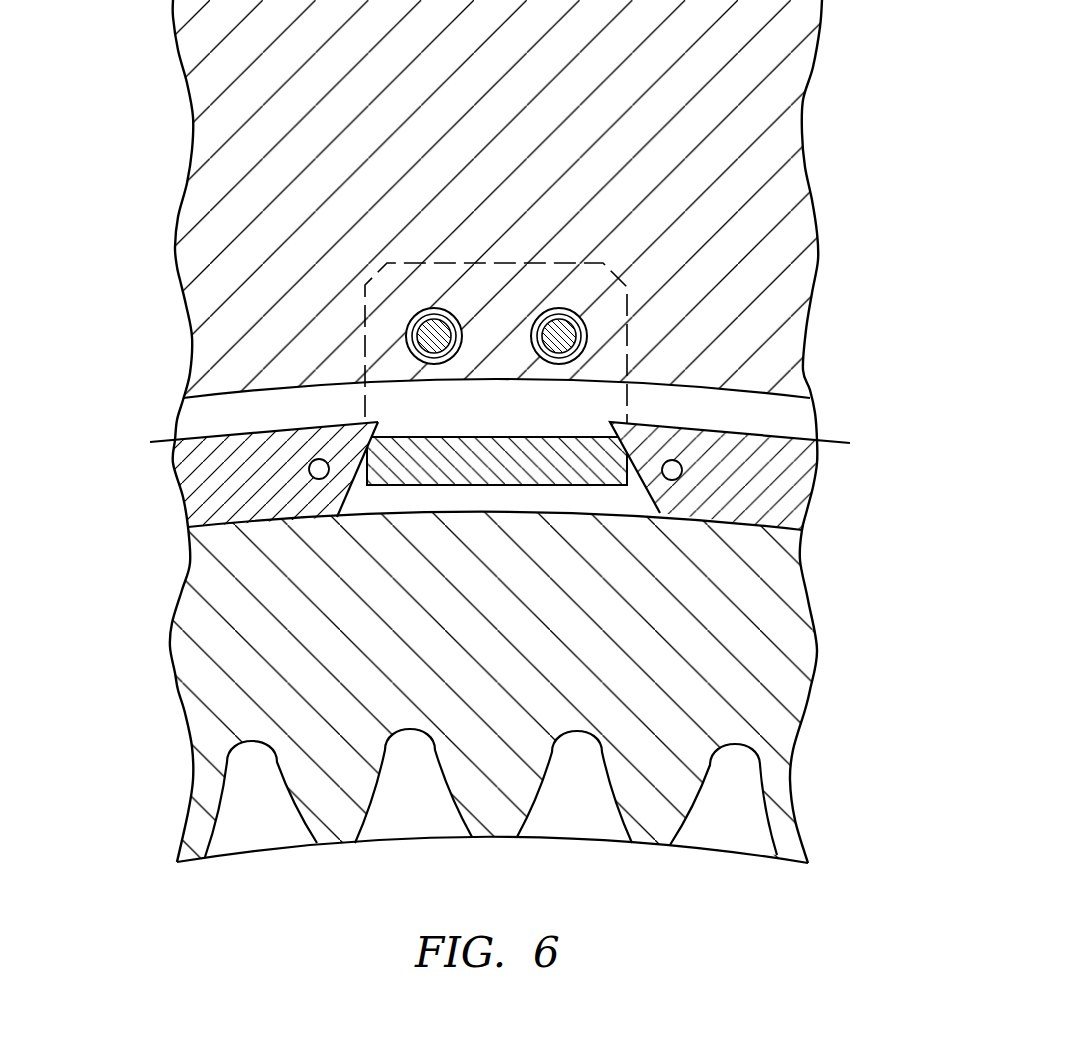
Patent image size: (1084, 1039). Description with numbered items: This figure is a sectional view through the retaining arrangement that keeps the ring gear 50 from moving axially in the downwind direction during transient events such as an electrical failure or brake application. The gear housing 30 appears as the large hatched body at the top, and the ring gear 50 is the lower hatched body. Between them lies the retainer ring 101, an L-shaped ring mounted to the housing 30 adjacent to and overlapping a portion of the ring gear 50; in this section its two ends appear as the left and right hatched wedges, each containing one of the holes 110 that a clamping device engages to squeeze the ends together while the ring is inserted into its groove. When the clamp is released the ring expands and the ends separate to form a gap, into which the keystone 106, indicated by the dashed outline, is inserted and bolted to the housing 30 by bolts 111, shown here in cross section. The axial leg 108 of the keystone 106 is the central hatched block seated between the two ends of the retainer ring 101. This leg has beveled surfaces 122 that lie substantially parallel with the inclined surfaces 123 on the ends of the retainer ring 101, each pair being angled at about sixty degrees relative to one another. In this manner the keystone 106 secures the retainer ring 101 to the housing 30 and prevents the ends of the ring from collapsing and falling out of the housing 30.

The gear housing 30 is at (783, 132).
The ring gear 50 is at (793, 703).
The retainer ring 101 is at (810, 410).
The keystone 106 is at (656, 265).
The axial leg of keystone 108 is at (580, 484).
The holes 110 is at (682, 470).
The bolts 111 is at (418, 337).
The beveled surfaces 122 is at (367, 445).
The inclined surfaces 123 is at (338, 490).